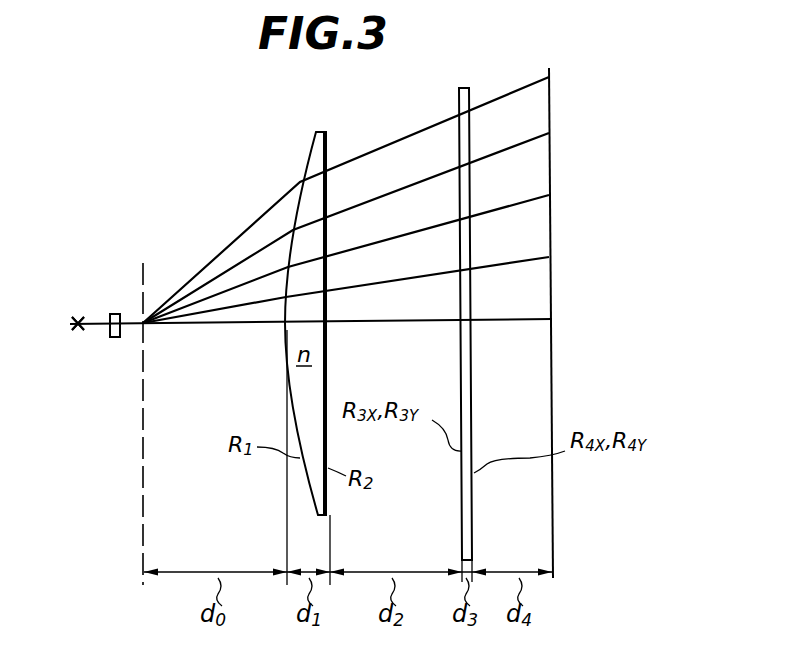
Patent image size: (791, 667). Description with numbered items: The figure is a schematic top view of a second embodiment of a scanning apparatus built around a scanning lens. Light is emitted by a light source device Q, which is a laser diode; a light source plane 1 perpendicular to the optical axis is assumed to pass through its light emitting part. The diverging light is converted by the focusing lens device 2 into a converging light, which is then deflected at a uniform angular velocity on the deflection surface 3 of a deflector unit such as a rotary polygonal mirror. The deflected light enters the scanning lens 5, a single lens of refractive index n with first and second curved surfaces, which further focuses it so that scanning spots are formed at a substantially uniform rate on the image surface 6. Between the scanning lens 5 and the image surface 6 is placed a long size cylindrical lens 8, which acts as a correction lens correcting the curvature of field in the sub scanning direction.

The light source device Q is at (76, 330).
The light source plane 1 is at (80, 318).
The focusing lens device 2 is at (115, 338).
The deflection surface 3 is at (146, 292).
The scanning lens 5 is at (320, 130).
The image surface 6 is at (552, 110).
The long size cylindrical lens 8 is at (459, 88).